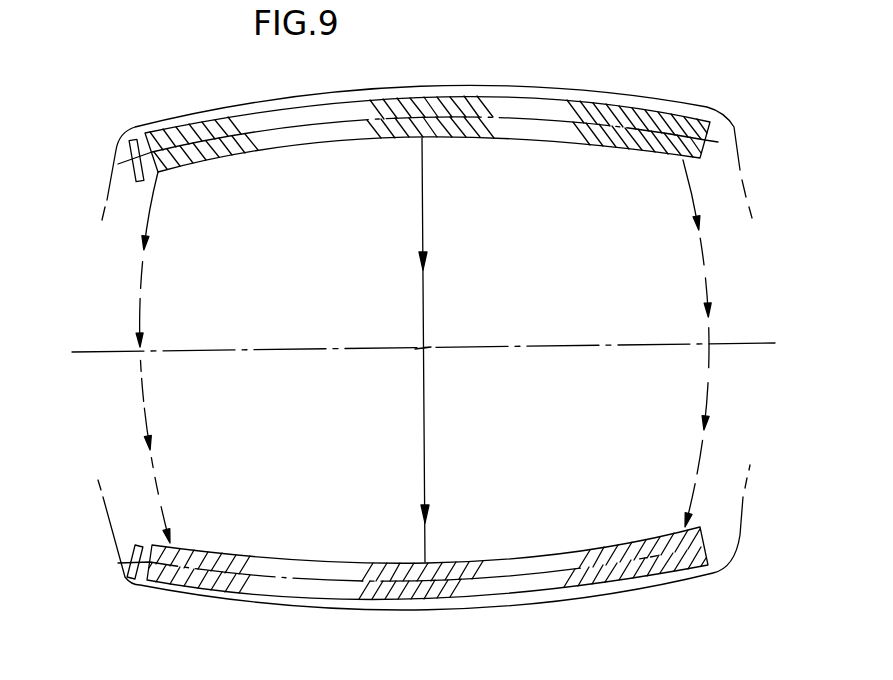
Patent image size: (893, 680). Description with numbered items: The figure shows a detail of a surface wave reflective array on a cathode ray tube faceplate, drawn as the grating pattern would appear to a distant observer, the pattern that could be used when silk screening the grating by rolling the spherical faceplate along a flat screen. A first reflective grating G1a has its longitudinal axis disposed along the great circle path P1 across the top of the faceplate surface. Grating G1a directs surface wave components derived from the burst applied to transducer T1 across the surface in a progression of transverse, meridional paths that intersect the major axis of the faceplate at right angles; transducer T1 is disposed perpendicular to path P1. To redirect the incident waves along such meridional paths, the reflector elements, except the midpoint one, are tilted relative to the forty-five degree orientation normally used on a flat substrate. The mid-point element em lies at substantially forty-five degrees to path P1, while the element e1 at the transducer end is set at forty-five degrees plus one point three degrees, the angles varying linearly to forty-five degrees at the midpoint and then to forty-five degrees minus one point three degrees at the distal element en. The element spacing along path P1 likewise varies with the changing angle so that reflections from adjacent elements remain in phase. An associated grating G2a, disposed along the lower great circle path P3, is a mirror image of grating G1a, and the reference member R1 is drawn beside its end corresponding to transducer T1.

The first reflective grating G1a is at (202, 119).
The associated grating G2a is at (273, 586).
The transducer T1 is at (118, 164).
The lower reference member R1 is at (118, 563).
The great circle path P1 is at (527, 118).
The path P3 is at (537, 576).
The first element segment (45°, 1.3°) e1 is at (203, 157).
The mid-point element em is at (407, 139).
The last element segment (45°-1.3°) en is at (670, 151).